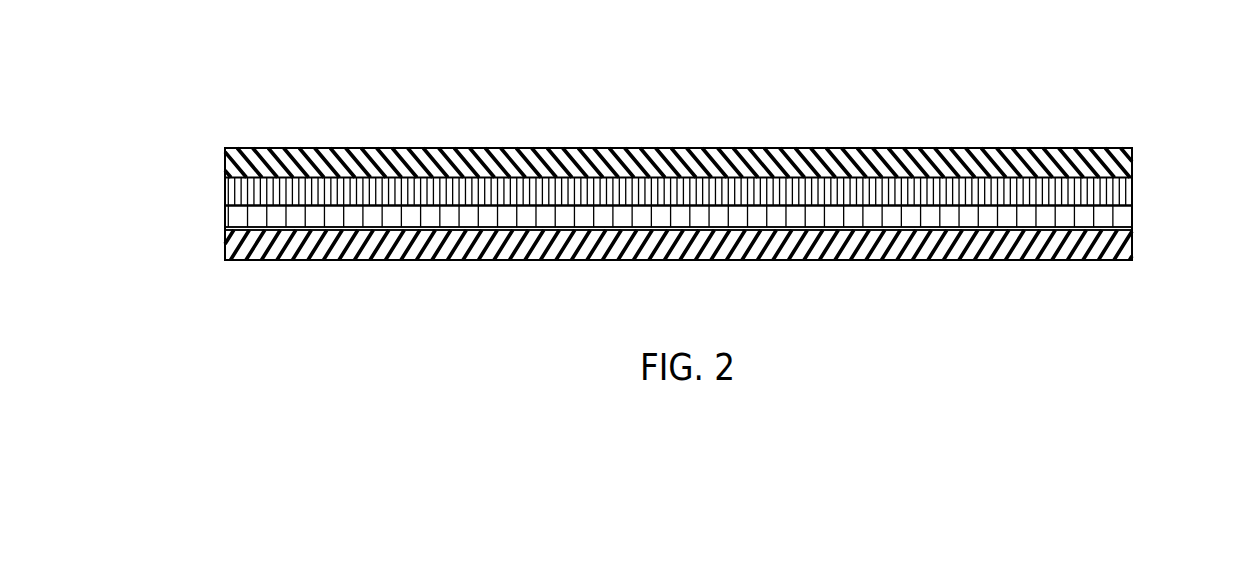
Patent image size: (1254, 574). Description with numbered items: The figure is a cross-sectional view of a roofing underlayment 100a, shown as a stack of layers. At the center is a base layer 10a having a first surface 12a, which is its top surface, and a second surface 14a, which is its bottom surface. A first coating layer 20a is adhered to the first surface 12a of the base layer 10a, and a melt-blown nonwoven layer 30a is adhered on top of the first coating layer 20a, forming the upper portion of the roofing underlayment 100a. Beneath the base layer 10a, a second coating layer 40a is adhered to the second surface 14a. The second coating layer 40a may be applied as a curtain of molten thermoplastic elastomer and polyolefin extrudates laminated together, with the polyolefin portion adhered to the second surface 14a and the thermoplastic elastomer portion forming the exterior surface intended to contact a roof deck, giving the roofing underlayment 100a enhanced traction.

The roofing underlayment 100a is at (1108, 86).
The melt-blown nonwoven layer 30a is at (243, 148).
The first coating layer 20a is at (1133, 193).
The first surface 12a is at (262, 205).
The base layer 10a is at (1133, 228).
The second surface 14a is at (953, 230).
The second coating layer 40a is at (270, 257).